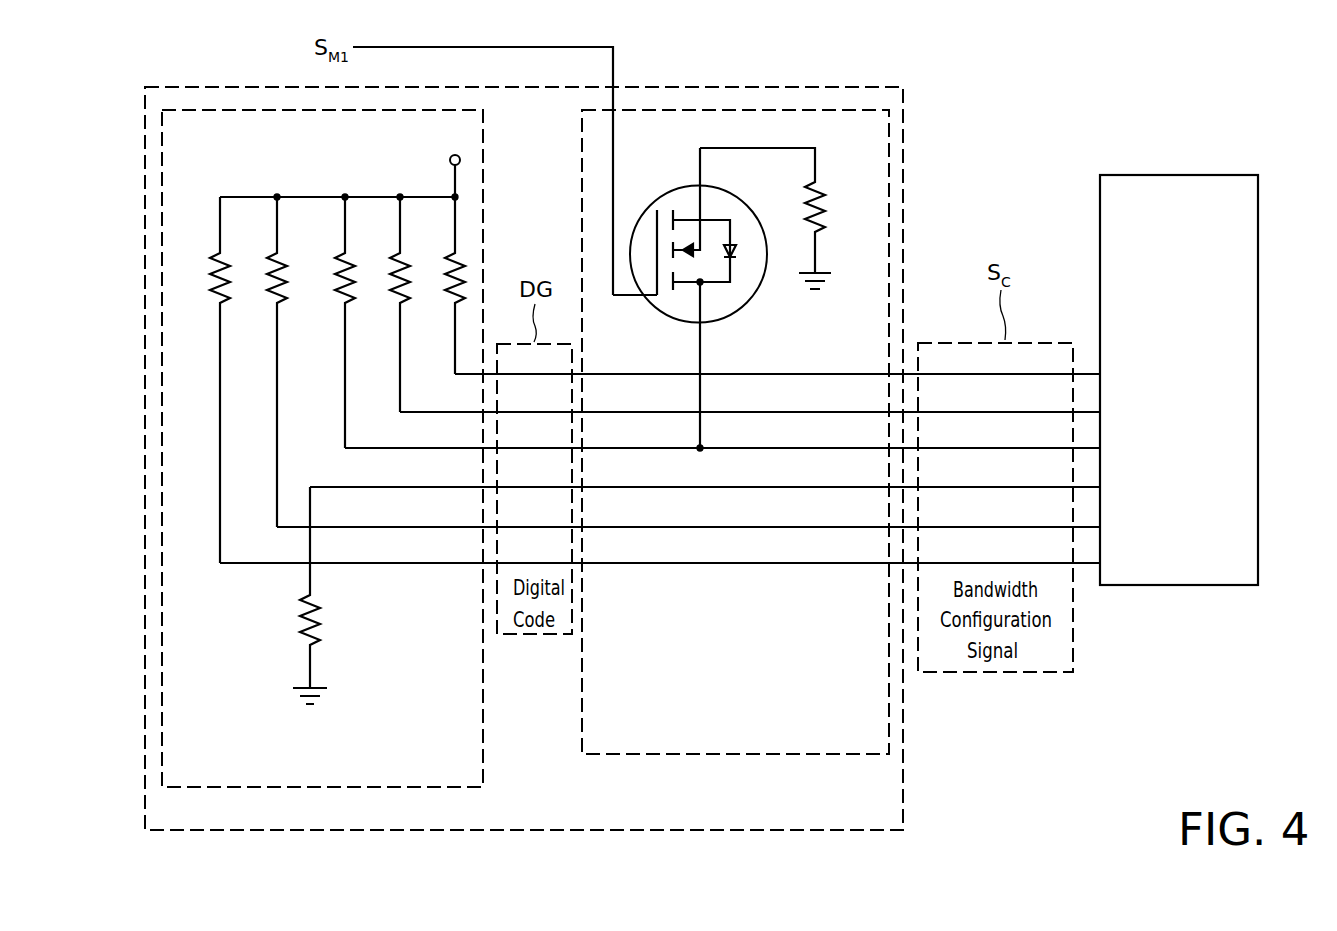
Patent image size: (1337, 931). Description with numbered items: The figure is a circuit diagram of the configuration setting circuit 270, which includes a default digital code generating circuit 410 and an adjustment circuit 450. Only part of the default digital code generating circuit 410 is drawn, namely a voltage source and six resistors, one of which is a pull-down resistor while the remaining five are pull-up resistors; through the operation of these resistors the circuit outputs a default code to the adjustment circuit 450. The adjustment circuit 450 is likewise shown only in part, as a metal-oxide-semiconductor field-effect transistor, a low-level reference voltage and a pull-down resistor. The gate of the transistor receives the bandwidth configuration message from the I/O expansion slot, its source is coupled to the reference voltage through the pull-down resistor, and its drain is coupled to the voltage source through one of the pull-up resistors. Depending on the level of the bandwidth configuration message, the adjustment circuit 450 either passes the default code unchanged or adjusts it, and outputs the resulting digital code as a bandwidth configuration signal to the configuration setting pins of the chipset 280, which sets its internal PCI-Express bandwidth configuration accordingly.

The configuration setting circuit 270 is at (820, 86).
The default digital code generating circuit 410 is at (197, 108).
The adjustment circuit 450 is at (748, 108).
The chipset 280 is at (1172, 174).